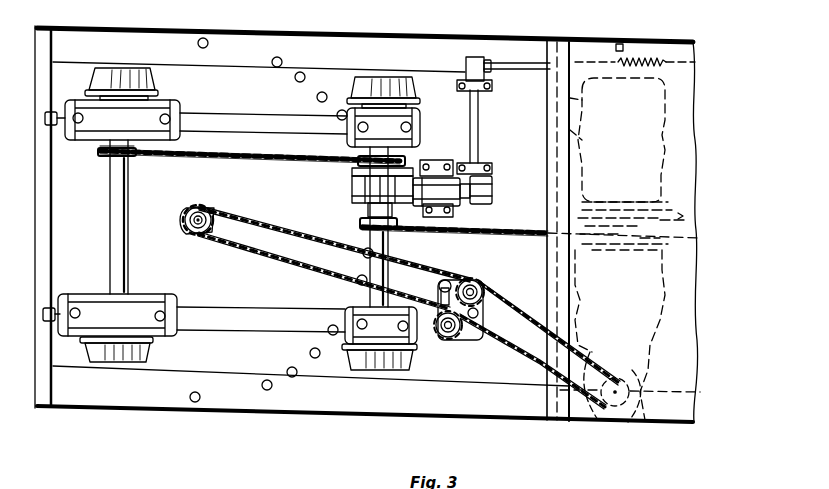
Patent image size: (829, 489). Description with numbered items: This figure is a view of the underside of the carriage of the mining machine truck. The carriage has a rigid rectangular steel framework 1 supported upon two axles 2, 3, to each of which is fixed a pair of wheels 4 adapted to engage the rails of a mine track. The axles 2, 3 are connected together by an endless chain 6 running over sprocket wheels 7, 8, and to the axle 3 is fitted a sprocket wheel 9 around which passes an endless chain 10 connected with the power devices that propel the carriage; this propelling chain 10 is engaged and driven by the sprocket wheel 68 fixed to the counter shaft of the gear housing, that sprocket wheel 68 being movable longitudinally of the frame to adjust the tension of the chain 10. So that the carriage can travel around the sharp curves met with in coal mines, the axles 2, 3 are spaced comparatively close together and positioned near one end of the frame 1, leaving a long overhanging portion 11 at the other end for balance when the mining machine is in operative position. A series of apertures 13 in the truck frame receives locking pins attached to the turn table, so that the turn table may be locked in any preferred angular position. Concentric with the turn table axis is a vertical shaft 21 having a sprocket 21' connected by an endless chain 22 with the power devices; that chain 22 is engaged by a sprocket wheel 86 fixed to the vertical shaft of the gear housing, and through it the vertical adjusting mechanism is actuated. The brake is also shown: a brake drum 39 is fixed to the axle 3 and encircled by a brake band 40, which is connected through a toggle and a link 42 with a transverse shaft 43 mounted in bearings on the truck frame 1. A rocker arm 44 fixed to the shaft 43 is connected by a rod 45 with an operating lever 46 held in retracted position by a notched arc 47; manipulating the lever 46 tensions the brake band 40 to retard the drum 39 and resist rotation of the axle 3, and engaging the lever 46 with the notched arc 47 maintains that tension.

The rigid rectangular steel framework 1 is at (302, 50).
The axle 2 is at (129, 262).
The axle 3 is at (371, 262).
The wheels 4 is at (152, 82).
The endless chain 6 is at (270, 162).
The sprocket wheel 7 is at (396, 162).
The sprocket wheel 8 is at (108, 158).
The sprocket wheel 9 is at (366, 222).
The endless chain 10 is at (518, 236).
The overhanging portion 11 is at (655, 414).
The apertures 13 is at (267, 391).
The vertical shaft 21 is at (198, 203).
The sprocket 21' is at (221, 230).
The endless chain 22 is at (280, 263).
The brake drum 39 is at (354, 171).
The brake band 40 is at (354, 192).
The link 42 is at (442, 188).
The transverse shaft 43 is at (480, 128).
The rocker arm 44 is at (480, 58).
The rod 45 is at (538, 70).
The operating lever 46 is at (619, 44).
The notched arc 47 is at (660, 60).
The sprocket wheel 68 is at (684, 242).
The sprocket wheel 86 is at (694, 392).